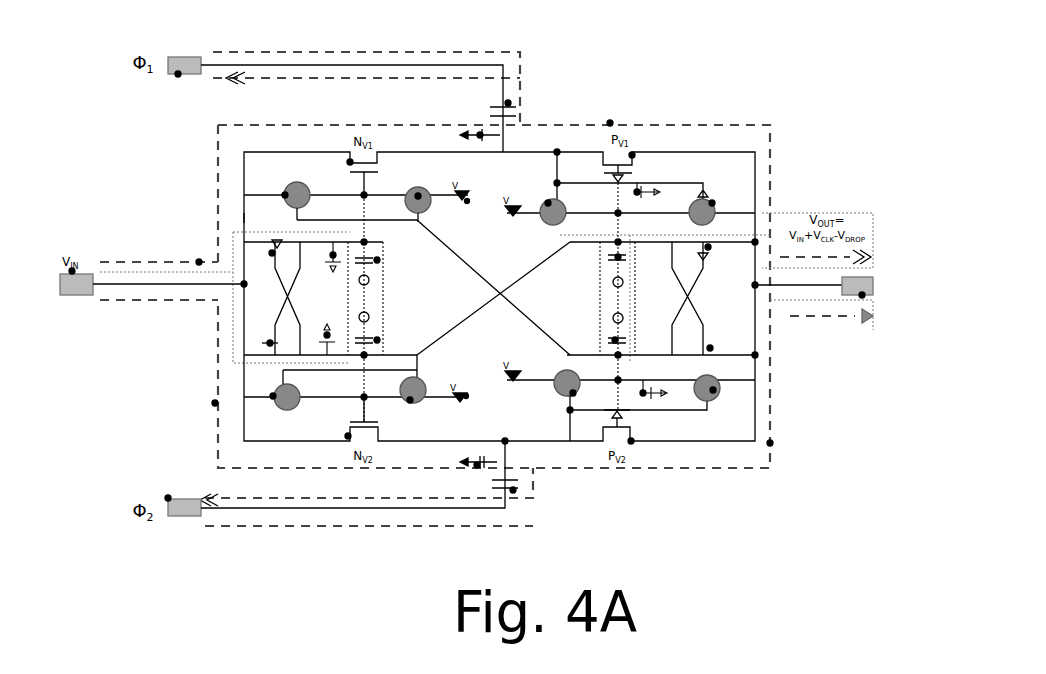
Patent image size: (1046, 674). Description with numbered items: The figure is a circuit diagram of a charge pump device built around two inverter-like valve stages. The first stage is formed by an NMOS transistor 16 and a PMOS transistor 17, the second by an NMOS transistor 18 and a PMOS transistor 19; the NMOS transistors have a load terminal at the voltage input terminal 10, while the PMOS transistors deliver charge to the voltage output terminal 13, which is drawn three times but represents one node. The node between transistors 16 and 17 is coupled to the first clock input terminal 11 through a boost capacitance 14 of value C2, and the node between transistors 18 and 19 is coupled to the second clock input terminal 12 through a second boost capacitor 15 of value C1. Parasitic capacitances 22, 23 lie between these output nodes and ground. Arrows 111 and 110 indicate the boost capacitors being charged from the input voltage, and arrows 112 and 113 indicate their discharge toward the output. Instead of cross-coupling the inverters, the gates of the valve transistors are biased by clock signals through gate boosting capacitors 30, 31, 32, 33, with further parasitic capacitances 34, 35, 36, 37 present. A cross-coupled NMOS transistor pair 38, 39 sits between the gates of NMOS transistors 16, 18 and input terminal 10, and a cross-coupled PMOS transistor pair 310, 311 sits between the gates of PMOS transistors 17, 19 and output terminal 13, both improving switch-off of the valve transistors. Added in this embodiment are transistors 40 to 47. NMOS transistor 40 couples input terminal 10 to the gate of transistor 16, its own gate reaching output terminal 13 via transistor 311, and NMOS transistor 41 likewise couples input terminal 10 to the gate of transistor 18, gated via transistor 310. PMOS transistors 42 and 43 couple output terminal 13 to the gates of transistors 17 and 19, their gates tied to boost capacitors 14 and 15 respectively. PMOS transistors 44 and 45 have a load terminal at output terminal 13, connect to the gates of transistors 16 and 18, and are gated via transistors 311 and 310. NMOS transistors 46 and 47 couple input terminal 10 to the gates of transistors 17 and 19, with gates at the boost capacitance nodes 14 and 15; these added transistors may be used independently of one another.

The voltage input terminal 10 is at (72, 270).
The first clock input terminal 11 is at (178, 75).
The second clock input terminal 12 is at (168, 498).
The voltage output terminal 13 is at (467, 201).
The boost capacitance 14 is at (508, 103).
The second boost capacitor 15 is at (513, 490).
The NMOS transistor 16 is at (350, 162).
The PMOS transistor 17 is at (632, 155).
The NMOS transistor 18 is at (348, 436).
The PMOS transistor 19 is at (632, 441).
The parasitic capacitance 22 is at (480, 135).
The parasitic capacitance 23 is at (477, 465).
The gate boosting capacitor 30 is at (377, 262).
The gate boosting capacitor 31 is at (377, 340).
The gate boosting capacitor 32 is at (608, 258).
The gate boosting capacitor 33 is at (615, 340).
The parasitic capacitance 34 is at (333, 255).
The parasitic capacitance 35 is at (327, 335).
The parasitic capacitance 36 is at (637, 192).
The parasitic capacitance 37 is at (643, 393).
The cross-coupled NMOS transistor 38 is at (243, 218).
The cross-coupled NMOS transistor 39 is at (270, 343).
The transistor 40 is at (285, 195).
The transistor 41 is at (273, 395).
The transistor 42 is at (712, 203).
The transistor 43 is at (713, 390).
The transistor 44 is at (418, 196).
The transistor 45 is at (410, 400).
The transistor 46 is at (548, 203).
The transistor 47 is at (573, 393).
The arrow 110 is at (199, 262).
The arrow 111 is at (214, 403).
The arrow 112 is at (610, 122).
The arrow 113 is at (770, 443).
The cross-coupled PMOS transistor 310 is at (745, 236).
The cross-coupled PMOS transistor 311 is at (757, 358).